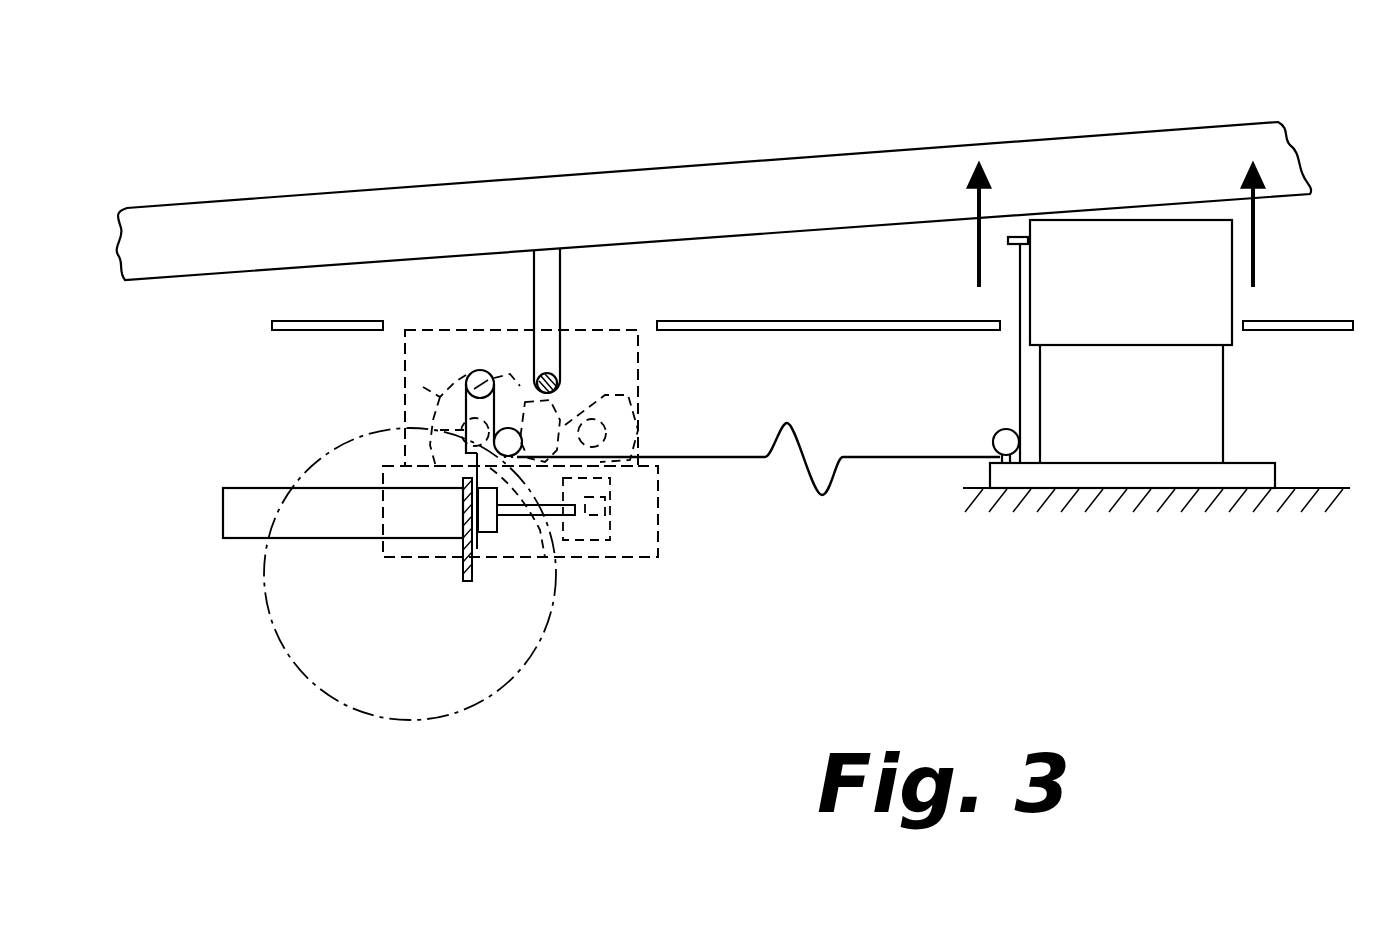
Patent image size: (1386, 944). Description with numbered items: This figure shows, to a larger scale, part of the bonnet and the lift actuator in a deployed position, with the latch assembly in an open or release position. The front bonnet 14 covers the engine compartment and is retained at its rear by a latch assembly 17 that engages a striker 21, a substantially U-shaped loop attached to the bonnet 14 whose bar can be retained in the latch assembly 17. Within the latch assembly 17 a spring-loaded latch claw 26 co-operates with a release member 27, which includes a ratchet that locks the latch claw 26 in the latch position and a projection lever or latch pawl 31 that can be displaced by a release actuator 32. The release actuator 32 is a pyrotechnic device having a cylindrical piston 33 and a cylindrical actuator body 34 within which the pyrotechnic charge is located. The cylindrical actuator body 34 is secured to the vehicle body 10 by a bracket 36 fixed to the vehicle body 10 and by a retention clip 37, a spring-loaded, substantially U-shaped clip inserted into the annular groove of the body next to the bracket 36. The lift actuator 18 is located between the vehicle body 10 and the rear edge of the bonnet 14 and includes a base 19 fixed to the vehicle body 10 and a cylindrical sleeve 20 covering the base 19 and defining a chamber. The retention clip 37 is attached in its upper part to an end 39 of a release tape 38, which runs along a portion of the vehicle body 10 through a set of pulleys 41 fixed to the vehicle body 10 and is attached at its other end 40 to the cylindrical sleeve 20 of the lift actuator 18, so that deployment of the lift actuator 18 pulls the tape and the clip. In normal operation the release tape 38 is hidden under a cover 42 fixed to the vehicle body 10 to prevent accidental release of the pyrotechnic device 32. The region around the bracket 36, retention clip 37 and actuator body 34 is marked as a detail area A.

The vehicle body 10 is at (1272, 503).
The front bonnet 14 is at (833, 173).
The latch assembly 17 is at (305, 395).
The lift actuator 18 is at (1090, 480).
The base 19 is at (1207, 417).
The cylindrical sleeve 20 is at (1207, 275).
The striker 21 is at (548, 312).
The latch claw 26 is at (403, 380).
The release member 27 is at (640, 410).
The latch pawl 31 is at (597, 532).
The release actuator 32 is at (200, 500).
The cylindrical piston 33 is at (513, 465).
The cylindrical actuator body 34 is at (346, 527).
The bracket 36 is at (463, 568).
The retention clip 37 is at (478, 552).
The release tape 38 is at (857, 458).
The end of release tape 39 is at (468, 450).
The other end of release tape 40 is at (1010, 248).
The pulley 41 is at (479, 372).
The cover 42 is at (830, 322).
The detail area A is at (297, 662).